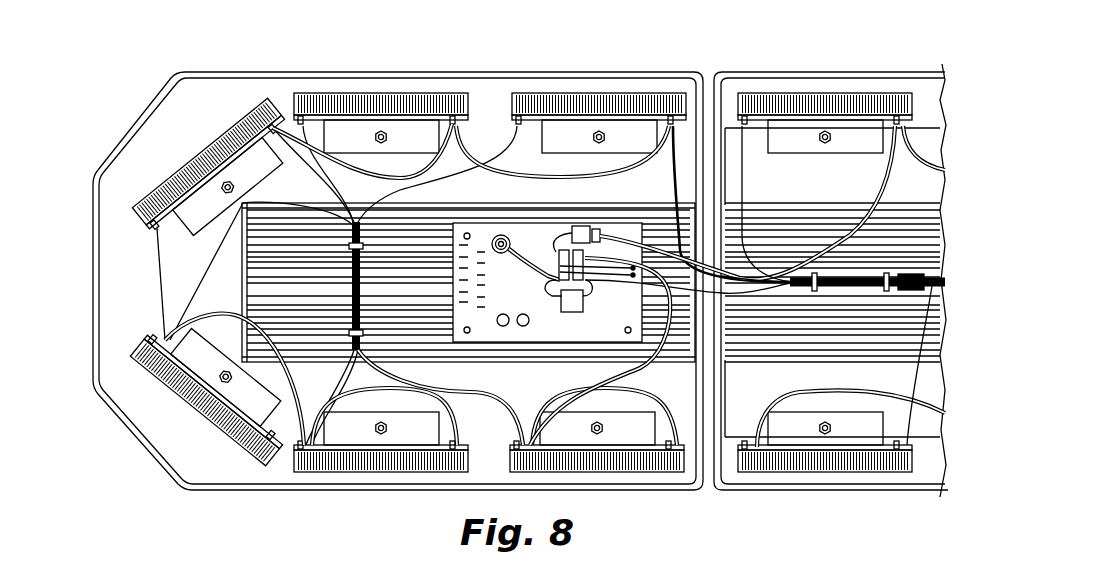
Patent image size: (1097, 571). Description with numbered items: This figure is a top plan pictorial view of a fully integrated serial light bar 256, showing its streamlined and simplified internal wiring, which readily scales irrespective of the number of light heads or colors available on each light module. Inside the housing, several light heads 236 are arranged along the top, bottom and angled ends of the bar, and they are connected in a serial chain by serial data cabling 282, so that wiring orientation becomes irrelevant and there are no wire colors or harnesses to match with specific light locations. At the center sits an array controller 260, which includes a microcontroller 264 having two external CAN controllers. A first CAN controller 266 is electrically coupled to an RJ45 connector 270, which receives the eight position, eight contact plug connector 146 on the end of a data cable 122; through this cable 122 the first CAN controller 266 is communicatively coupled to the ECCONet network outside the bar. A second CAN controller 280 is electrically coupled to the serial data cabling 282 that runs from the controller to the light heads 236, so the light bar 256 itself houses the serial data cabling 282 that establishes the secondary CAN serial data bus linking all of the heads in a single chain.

The serial light bar 256 is at (171, 66).
The light heads 236 is at (378, 100).
The serial data cabling 282 is at (490, 163).
The array controller 260 is at (481, 228).
The first CAN controller 266 is at (544, 262).
The RJ45 connector 270 is at (579, 226).
The plug connector 146 is at (596, 229).
The second CAN controller 280 is at (641, 244).
The microcontroller 264 is at (570, 312).
The data cable 122 is at (895, 272).